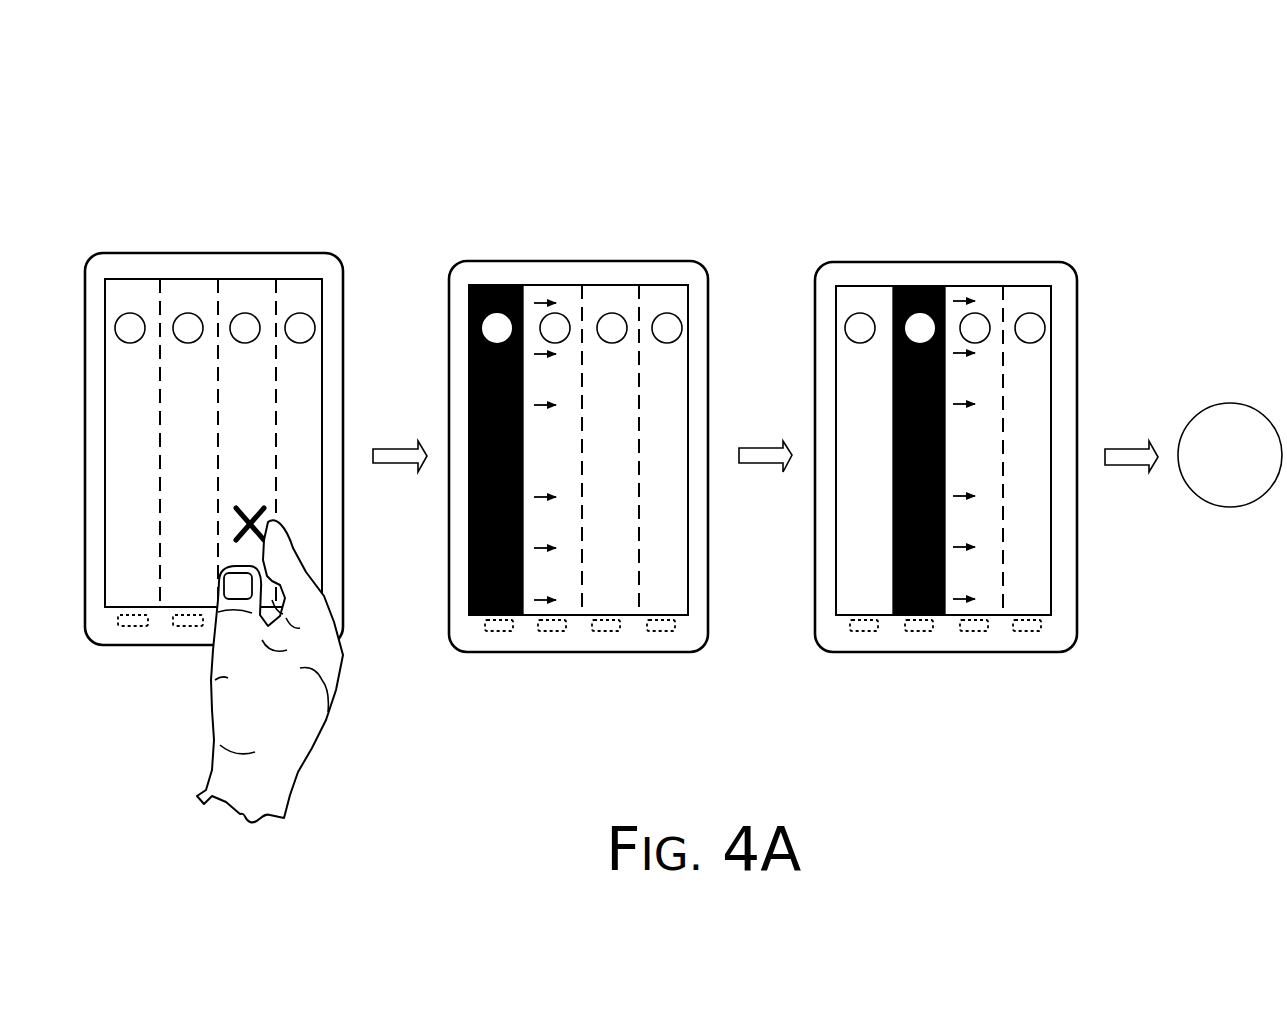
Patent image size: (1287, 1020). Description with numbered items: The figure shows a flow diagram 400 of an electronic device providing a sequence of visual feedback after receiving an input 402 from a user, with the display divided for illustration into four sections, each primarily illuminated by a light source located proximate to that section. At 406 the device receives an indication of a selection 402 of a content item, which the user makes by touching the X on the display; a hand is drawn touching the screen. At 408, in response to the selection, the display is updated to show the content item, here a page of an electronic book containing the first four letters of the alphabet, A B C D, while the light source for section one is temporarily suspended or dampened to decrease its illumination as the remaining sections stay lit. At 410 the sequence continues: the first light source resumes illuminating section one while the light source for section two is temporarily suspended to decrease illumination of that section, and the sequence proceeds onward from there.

The flow diagram 400 is at (138, 84).
The input 402 is at (318, 540).
The receiving step 406 is at (234, 236).
The display update step 408 is at (572, 236).
The sequence continuation step 410 is at (938, 236).